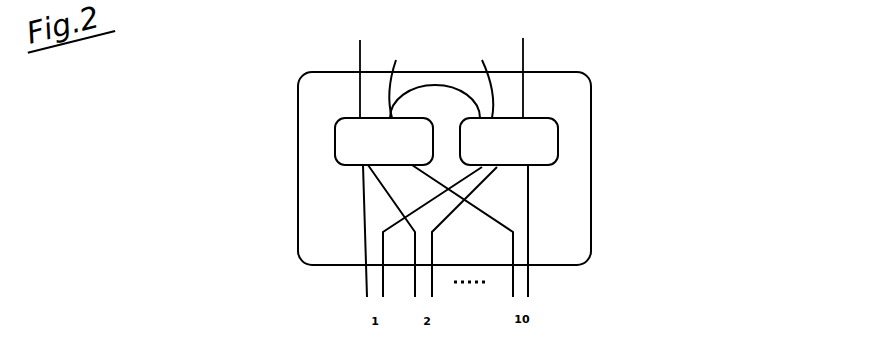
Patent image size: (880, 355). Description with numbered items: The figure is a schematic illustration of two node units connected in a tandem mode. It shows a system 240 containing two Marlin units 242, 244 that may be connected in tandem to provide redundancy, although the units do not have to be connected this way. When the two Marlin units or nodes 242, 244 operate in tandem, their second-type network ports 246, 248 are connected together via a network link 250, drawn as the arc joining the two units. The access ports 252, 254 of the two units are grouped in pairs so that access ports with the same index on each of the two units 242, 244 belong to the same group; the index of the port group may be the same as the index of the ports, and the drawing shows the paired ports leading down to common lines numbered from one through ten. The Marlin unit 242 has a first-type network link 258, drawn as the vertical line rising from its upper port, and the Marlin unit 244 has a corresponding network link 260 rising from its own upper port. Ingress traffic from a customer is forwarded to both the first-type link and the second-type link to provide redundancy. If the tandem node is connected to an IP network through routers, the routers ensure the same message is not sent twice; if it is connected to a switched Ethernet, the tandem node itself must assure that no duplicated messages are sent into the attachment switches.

The system 240 is at (677, 50).
The Marlin unit 242 is at (345, 133).
The Marlin unit 244 is at (547, 138).
The U2 network port 246 is at (393, 75).
The U2 network port 248 is at (481, 75).
The U2 link 250 is at (443, 85).
The access ports 252 is at (350, 165).
The access ports 254 is at (545, 165).
The U1 link 258 is at (358, 57).
The U1 link 260 is at (523, 53).